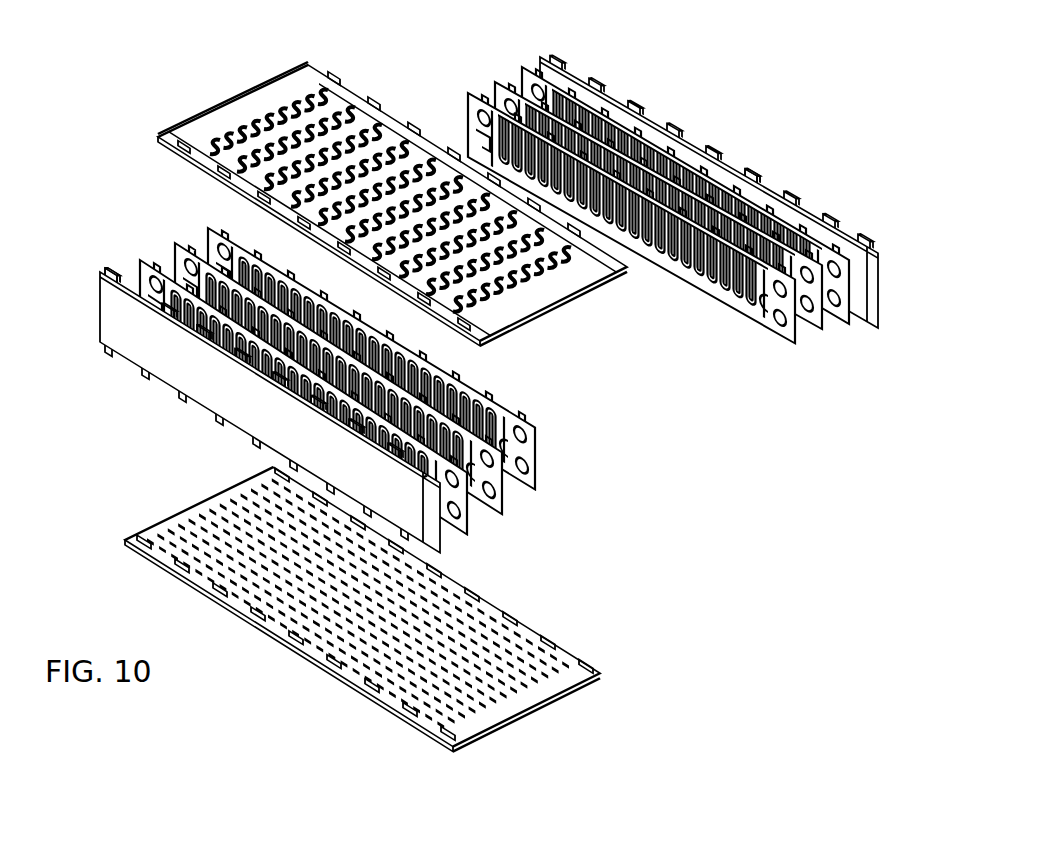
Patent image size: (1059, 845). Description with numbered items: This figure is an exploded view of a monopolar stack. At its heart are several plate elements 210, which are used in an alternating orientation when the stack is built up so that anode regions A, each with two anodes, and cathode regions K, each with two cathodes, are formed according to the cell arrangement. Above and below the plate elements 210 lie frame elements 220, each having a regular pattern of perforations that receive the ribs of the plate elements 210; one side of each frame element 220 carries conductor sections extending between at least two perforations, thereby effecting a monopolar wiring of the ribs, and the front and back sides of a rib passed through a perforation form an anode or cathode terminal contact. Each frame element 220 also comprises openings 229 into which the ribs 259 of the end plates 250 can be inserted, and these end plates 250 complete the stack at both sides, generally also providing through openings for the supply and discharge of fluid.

The plate element 210 is at (536, 418).
The frame element 220 is at (243, 115).
The opening 229 is at (160, 138).
The end plate 250 is at (484, 304).
The rib 259 is at (118, 262).
The anode region A is at (835, 335).
The cathode region K is at (816, 337).